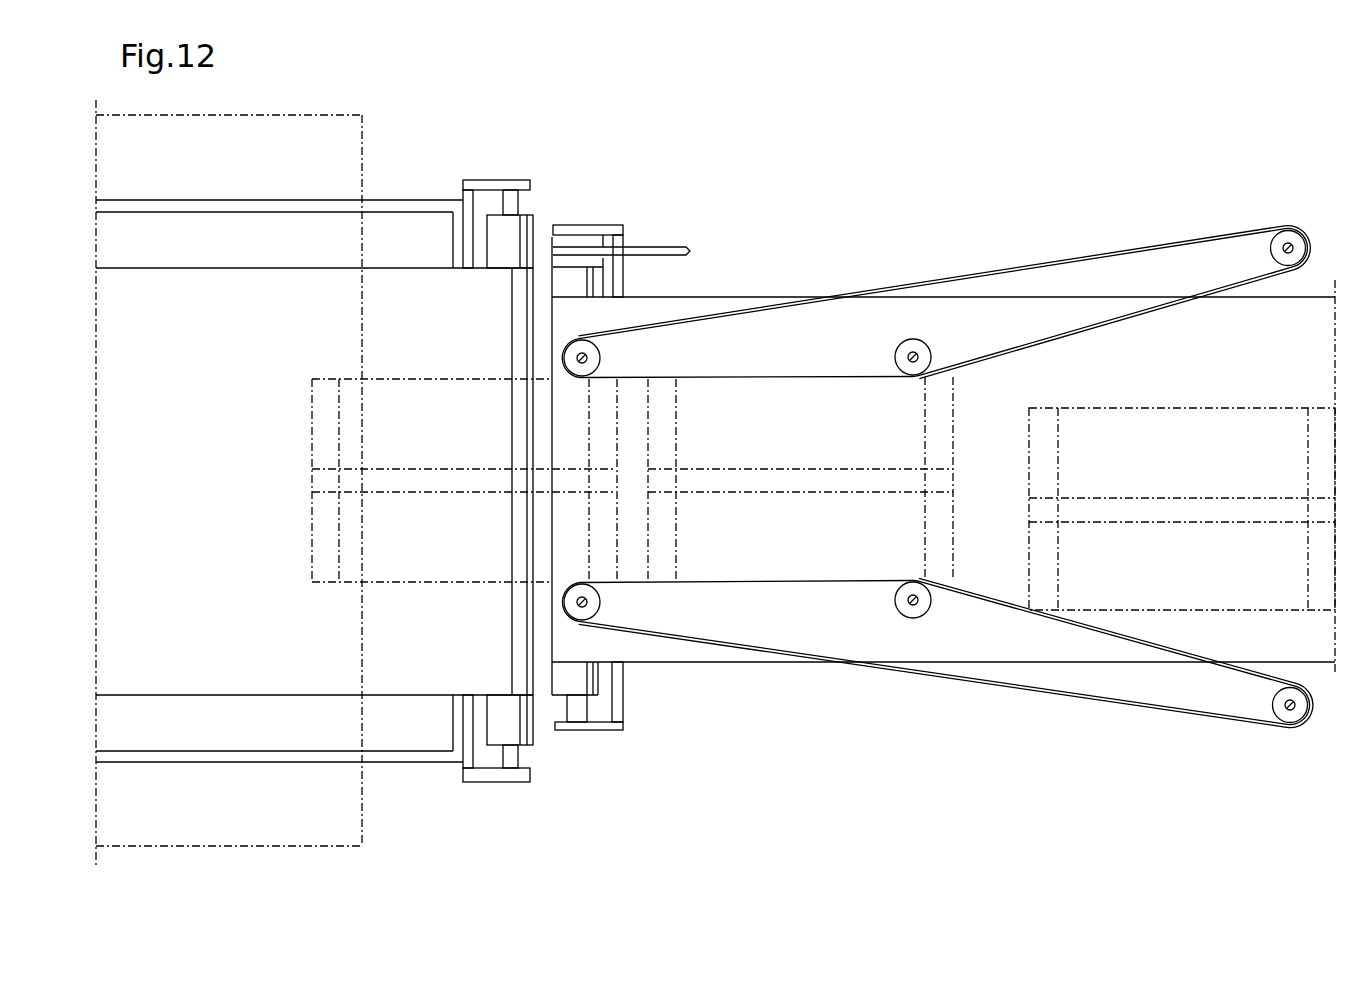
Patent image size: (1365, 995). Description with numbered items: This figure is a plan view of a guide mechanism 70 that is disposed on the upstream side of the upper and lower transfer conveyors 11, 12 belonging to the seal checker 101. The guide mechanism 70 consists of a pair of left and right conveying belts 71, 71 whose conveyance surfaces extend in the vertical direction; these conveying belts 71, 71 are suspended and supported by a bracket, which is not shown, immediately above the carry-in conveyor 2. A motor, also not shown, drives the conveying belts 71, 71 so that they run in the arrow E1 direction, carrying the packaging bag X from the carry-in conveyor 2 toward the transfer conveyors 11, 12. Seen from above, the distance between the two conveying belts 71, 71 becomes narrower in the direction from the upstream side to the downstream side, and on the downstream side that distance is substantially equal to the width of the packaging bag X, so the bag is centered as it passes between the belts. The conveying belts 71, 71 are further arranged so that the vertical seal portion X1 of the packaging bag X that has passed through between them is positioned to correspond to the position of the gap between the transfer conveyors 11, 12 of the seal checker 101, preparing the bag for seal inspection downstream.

The lower transfer conveyor 12 is at (366, 148).
The upper transfer conveyor 11 is at (405, 766).
The seal checker 101 is at (604, 121).
The carry-in conveyor 2 is at (646, 226).
The guide mechanism 70 is at (992, 256).
The conveying belt 71 is at (1085, 258).
The packaging bag X is at (402, 376).
The vertical seal portion X1 is at (562, 473).
The arrow E1 direction E1 is at (780, 365).